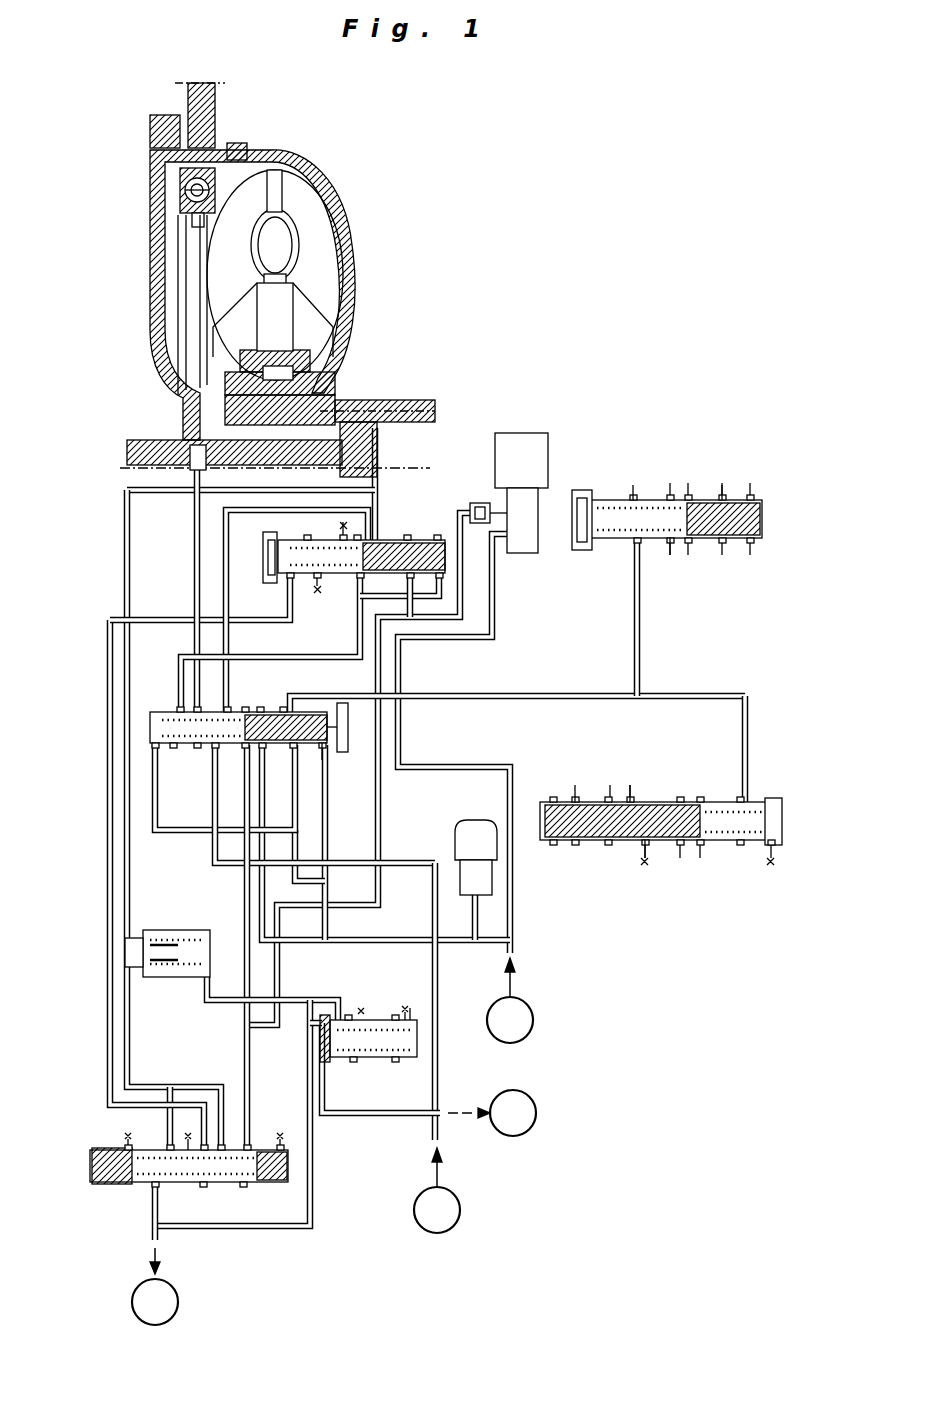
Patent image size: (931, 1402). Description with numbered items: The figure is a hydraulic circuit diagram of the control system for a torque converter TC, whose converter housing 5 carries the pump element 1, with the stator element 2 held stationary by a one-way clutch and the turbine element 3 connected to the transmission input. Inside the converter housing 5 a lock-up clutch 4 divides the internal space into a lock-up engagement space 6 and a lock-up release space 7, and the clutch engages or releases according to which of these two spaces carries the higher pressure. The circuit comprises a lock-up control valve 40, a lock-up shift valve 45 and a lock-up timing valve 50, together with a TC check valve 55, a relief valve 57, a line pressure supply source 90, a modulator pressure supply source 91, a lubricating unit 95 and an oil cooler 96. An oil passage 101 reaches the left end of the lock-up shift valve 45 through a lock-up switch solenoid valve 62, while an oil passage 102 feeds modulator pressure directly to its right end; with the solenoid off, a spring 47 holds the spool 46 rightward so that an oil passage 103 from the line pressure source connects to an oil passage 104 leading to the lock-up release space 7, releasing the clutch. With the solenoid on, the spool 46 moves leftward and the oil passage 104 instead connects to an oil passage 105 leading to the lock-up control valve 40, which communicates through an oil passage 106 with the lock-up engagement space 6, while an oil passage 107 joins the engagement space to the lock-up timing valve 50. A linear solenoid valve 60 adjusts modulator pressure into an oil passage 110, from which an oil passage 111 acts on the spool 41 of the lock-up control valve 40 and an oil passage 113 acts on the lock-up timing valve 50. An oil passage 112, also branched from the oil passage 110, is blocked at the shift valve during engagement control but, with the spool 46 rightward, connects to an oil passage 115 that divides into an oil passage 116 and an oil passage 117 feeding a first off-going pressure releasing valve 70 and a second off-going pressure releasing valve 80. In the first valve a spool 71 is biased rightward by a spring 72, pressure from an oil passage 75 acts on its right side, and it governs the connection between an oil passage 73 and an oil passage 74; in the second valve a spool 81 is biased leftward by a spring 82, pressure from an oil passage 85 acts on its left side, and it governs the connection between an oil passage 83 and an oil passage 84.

The pump element 1 is at (325, 281).
The stator element 2 is at (235, 281).
The turbine element 3 is at (285, 330).
The lock-up clutch 4 is at (165, 212).
The converter housing 5 is at (166, 299).
The lock-up engagement space 6 is at (237, 167).
The lock-up release space 7 is at (190, 335).
The torque converter TC is at (324, 174).
The lock-up control valve 40 is at (396, 531).
The spool 41 is at (424, 540).
The lock-up shift valve 45 is at (256, 700).
The spool 46 is at (308, 710).
The spring 47 is at (174, 748).
The lock-up timing valve 50 is at (108, 1134).
The TC check valve 55 is at (151, 930).
The relief valve 57 is at (350, 1058).
The linear solenoid valve 60 is at (550, 444).
The lock-up switch solenoid valve 62 is at (476, 818).
The first off-going pressure releasing valve 70 is at (742, 482).
The spool 71 is at (726, 548).
The spring 72 is at (602, 544).
The oil passage 73 is at (648, 498).
The oil passage 74 is at (670, 554).
The oil passage 75 is at (718, 494).
The second off-going pressure releasing valve 80 is at (714, 789).
The spool 81 is at (600, 844).
The spring 82 is at (734, 846).
The oil passage 83 is at (632, 790).
The oil passage 84 is at (646, 860).
The oil passage 85 is at (576, 794).
The line pressure supply source 90 is at (460, 1215).
The modulator pressure supply source 91 is at (533, 1024).
The lubricating unit 95 is at (534, 1130).
The oil cooler 96 is at (178, 1302).
The oil passage 101 is at (392, 864).
The oil passage 102 is at (326, 766).
The oil passage 103 is at (436, 966).
The oil passage 104 is at (195, 550).
The oil passage 105 is at (282, 654).
The oil passage 106 is at (376, 470).
The oil passage 107 is at (126, 555).
The oil passage 110 is at (468, 614).
The oil passage 111 is at (414, 605).
The oil passage 112 is at (349, 813).
The oil passage 113 is at (252, 1062).
The oil passage 115 is at (520, 692).
The oil passage 116 is at (640, 619).
The oil passage 117 is at (748, 708).